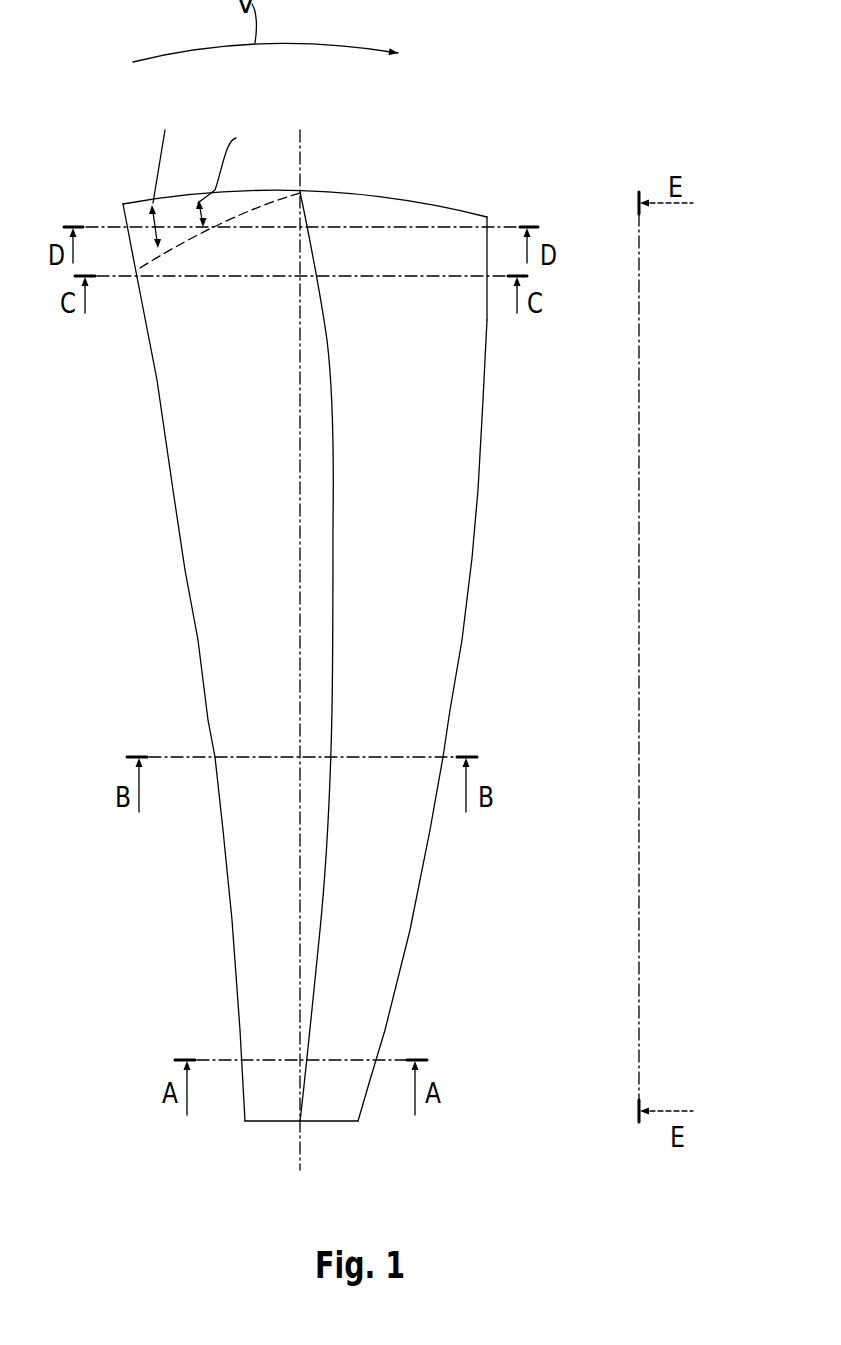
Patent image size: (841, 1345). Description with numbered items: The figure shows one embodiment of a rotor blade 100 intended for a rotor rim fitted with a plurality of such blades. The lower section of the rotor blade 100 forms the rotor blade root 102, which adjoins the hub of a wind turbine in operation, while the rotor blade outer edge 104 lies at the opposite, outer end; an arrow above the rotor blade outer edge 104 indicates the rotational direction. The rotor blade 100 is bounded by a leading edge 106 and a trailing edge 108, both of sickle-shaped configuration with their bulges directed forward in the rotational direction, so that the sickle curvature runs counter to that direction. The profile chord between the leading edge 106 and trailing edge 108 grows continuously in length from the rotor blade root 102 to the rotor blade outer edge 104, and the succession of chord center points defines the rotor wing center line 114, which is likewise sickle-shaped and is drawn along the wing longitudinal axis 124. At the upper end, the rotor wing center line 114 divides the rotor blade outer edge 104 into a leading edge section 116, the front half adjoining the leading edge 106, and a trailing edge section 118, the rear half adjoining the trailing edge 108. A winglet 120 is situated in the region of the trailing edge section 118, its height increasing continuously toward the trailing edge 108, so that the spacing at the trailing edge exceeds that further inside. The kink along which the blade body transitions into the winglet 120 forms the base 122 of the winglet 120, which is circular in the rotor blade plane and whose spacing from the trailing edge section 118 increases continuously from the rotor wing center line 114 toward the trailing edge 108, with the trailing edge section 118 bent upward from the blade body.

The rotor blade 100 is at (577, 118).
The rotor blade root 102 is at (325, 1122).
The rotor blade outer edge 104 is at (380, 197).
The leading edge 106 is at (472, 558).
The trailing edge 108 is at (175, 508).
The rotor wing center line 114 is at (333, 627).
The leading edge section 116 is at (452, 210).
The trailing edge section 118 is at (148, 202).
The winglet 120 is at (180, 213).
The base of the winglet 122 is at (192, 236).
The wing longitudinal axis 124 is at (300, 550).